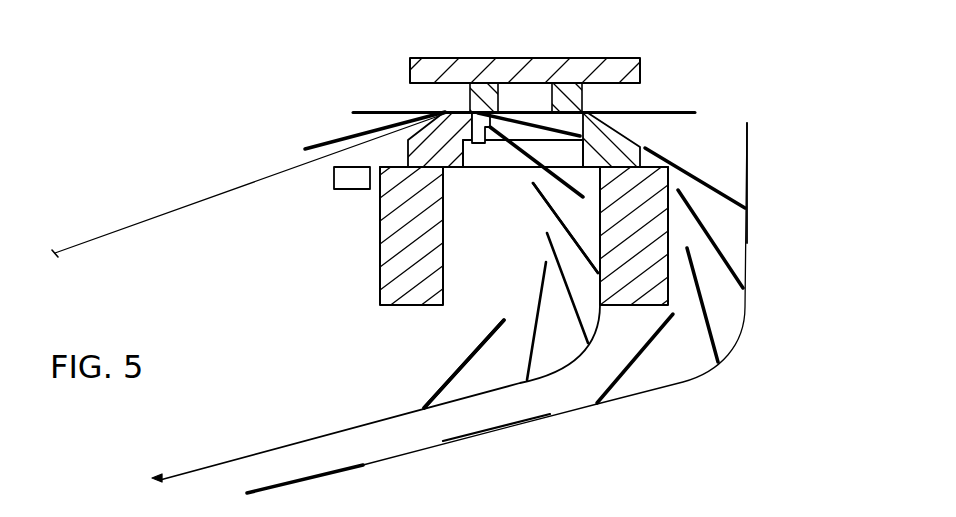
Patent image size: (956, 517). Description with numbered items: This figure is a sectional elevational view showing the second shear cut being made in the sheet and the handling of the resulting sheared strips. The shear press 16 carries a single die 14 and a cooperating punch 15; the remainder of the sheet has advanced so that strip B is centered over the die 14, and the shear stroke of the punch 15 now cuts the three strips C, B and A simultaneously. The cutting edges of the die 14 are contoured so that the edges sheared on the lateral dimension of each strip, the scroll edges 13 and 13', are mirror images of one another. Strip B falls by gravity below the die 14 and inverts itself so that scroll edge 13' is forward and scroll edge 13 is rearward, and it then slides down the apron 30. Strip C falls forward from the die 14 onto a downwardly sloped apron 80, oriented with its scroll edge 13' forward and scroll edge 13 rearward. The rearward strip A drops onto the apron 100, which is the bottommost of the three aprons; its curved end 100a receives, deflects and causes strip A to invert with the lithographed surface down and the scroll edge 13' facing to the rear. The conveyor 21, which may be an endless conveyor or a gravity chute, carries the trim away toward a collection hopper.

The scroll edge 13 is at (525, 247).
The scroll edge 13' is at (497, 232).
The die 14 is at (632, 131).
The punch 15 is at (581, 112).
The shear press 16 is at (370, 273).
The conveyor 21 is at (326, 189).
The apron 30 is at (549, 380).
The apron 80 is at (304, 163).
The apron 100 is at (400, 456).
The curved end 100a is at (747, 242).
The strip A is at (667, 114).
The strip B is at (538, 112).
The strip C is at (407, 112).